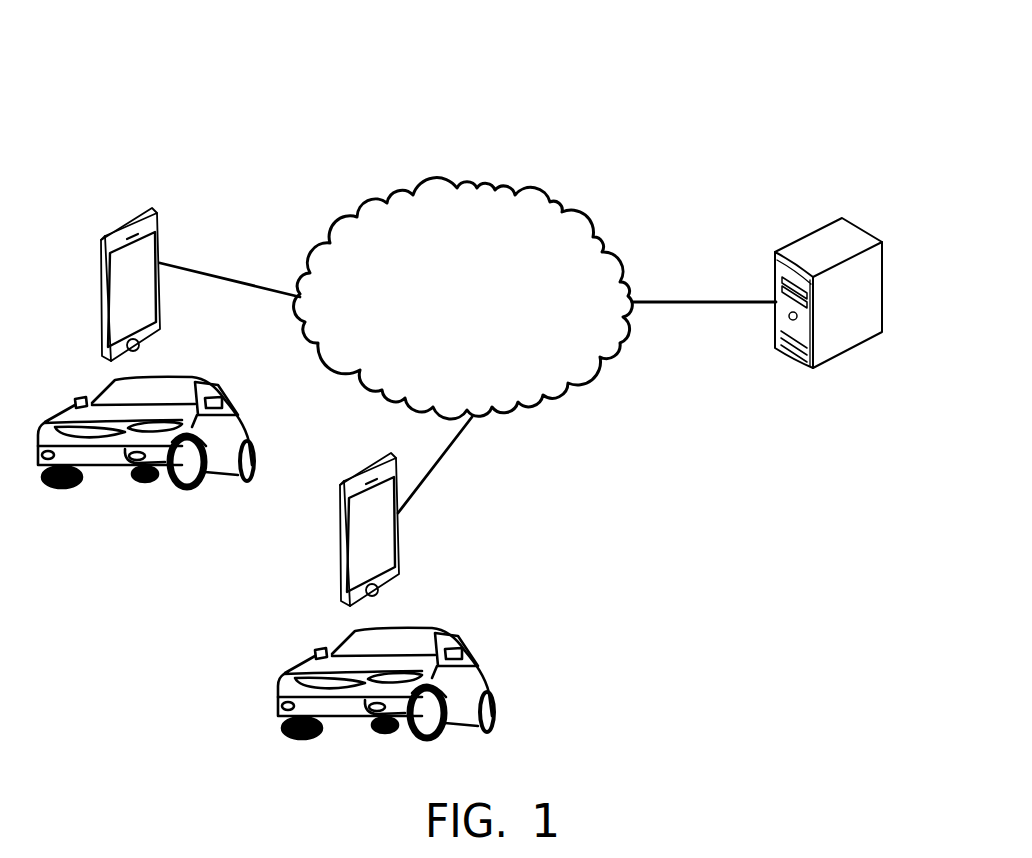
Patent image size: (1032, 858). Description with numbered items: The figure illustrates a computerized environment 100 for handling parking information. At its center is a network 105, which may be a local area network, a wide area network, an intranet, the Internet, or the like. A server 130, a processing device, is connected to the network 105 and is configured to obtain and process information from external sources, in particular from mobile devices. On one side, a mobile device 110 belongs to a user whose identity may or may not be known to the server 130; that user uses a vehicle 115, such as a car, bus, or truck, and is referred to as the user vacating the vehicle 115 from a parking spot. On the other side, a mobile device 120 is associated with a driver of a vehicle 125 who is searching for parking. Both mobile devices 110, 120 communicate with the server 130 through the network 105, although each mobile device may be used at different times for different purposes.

The computerized environment 100 is at (266, 119).
The network 105 is at (526, 183).
The mobile device 110 is at (156, 206).
The vehicle 115 is at (196, 377).
The mobile device 120 is at (394, 458).
The vehicle 125 is at (436, 630).
The server 130 is at (857, 222).